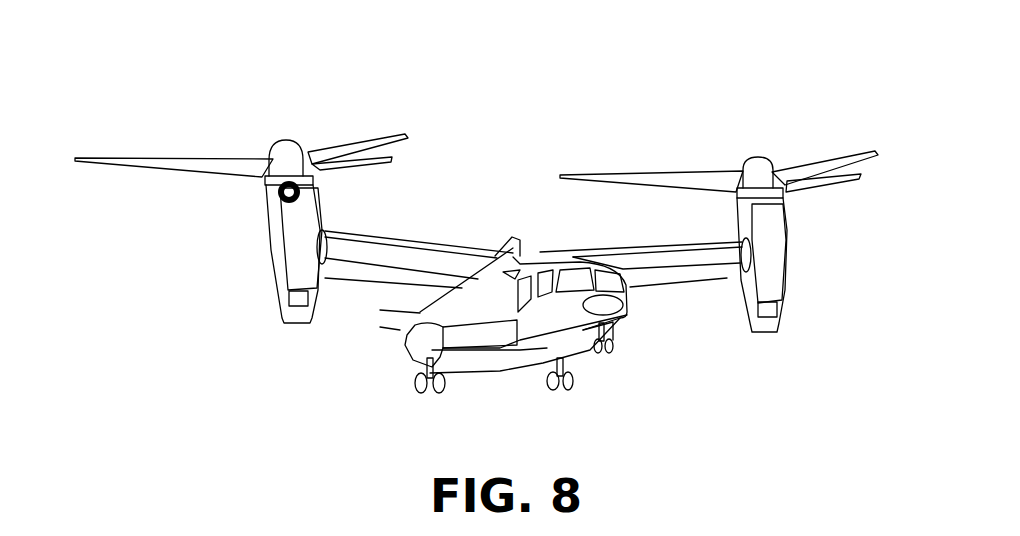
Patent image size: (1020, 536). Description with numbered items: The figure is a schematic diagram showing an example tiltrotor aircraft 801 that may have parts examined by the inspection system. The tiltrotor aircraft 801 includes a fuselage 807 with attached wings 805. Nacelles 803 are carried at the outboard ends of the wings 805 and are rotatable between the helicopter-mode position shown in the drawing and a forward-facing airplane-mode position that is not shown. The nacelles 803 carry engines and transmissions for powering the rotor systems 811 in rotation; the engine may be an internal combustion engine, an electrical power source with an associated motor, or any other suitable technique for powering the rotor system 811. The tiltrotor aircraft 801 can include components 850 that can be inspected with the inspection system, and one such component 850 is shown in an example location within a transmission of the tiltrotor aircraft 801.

The tiltrotor aircraft 801 is at (570, 113).
The nacelles 803 is at (250, 269).
The wings 805 is at (400, 237).
The fuselage 807 is at (628, 316).
The rotor systems 811 is at (378, 137).
The components 850 is at (279, 193).